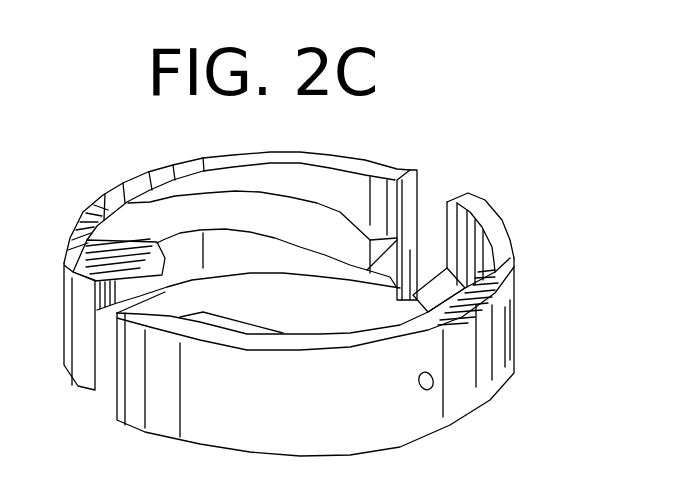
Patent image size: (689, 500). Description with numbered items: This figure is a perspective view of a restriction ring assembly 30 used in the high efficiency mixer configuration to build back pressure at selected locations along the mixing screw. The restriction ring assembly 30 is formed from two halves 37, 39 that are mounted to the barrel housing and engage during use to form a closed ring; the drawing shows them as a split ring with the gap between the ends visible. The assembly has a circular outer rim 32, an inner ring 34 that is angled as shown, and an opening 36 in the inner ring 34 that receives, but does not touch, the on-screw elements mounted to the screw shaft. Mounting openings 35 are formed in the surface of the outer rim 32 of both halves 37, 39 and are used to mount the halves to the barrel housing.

The restriction ring assembly 30 is at (463, 422).
The circular outer rim 32 is at (497, 302).
The inner ring 34 is at (128, 240).
The mounting openings 35 is at (418, 383).
The opening 36 is at (335, 300).
The half 37 is at (184, 310).
The half 39 is at (408, 228).